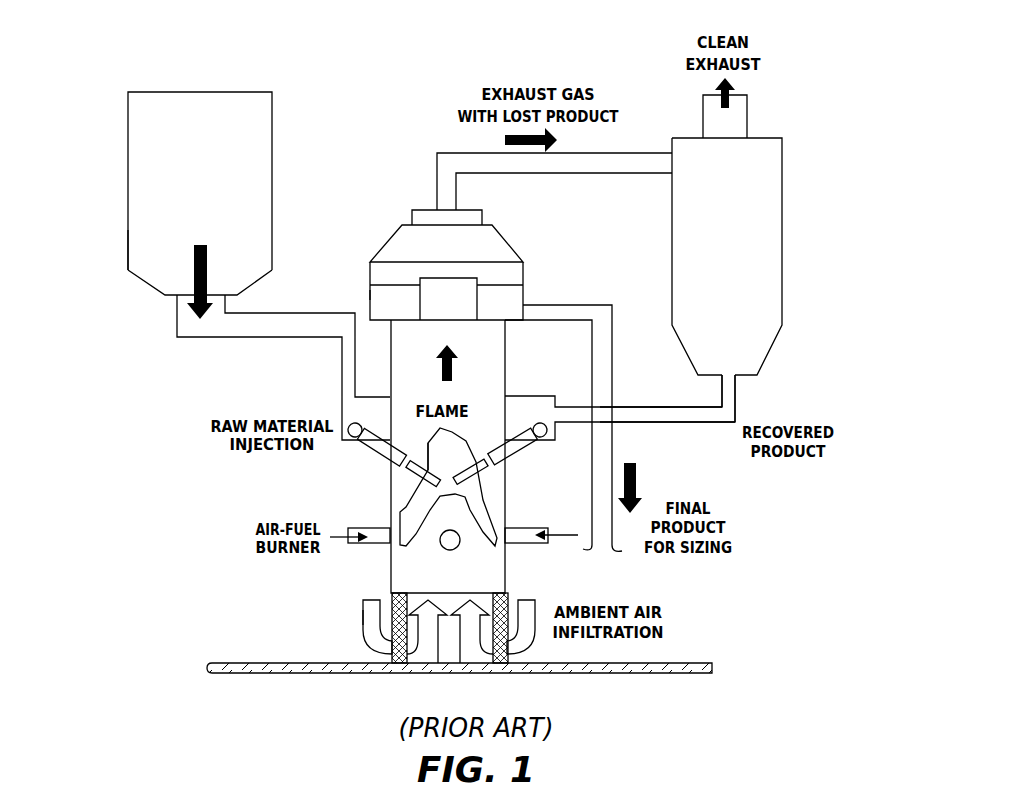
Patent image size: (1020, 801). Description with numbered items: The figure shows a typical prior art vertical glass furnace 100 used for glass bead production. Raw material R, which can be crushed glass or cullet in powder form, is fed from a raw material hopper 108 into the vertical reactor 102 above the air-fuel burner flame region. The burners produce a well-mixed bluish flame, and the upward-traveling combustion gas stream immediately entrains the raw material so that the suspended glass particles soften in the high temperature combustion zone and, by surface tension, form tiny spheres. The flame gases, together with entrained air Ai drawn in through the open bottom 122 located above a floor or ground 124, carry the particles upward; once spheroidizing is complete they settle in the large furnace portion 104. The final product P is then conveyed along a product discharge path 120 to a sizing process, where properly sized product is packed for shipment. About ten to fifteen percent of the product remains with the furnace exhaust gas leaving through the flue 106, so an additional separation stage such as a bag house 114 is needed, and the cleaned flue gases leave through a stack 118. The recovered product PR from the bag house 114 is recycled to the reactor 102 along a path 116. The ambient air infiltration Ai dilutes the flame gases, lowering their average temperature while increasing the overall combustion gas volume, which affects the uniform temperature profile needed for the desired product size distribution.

The vertical glass furnace 100 is at (168, 524).
The vertical reactor 102 is at (493, 372).
The large furnace portion 104 is at (512, 271).
The flue 106 is at (450, 198).
The raw material hopper 108 is at (255, 176).
The bag house 114 is at (763, 215).
The recycle path 116 is at (725, 388).
The stack 118 is at (735, 125).
The product discharge path 120 is at (605, 378).
The open bottom 122 is at (500, 572).
The floor or ground 124 is at (642, 662).
The raw material R is at (148, 247).
The final product P is at (382, 297).
The flame F is at (415, 498).
The entrained air Ai is at (373, 628).
The recovered product PR is at (658, 418).